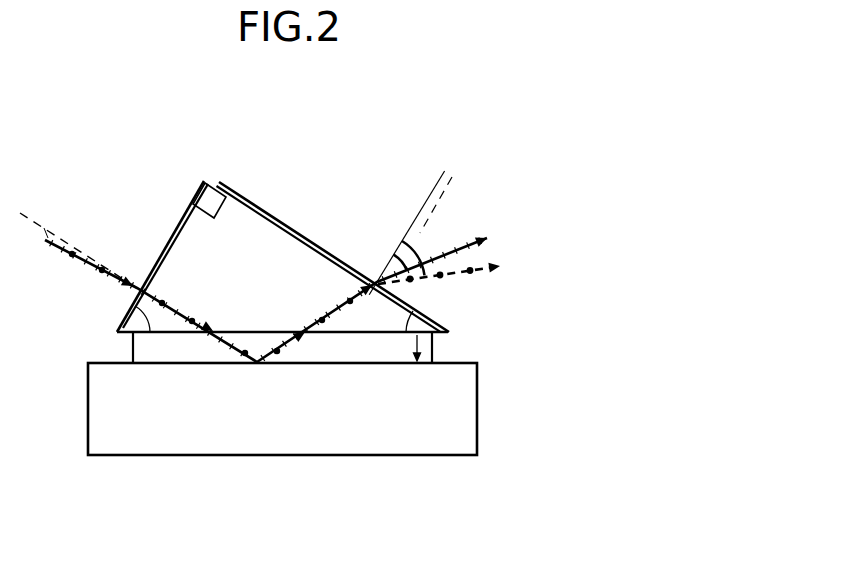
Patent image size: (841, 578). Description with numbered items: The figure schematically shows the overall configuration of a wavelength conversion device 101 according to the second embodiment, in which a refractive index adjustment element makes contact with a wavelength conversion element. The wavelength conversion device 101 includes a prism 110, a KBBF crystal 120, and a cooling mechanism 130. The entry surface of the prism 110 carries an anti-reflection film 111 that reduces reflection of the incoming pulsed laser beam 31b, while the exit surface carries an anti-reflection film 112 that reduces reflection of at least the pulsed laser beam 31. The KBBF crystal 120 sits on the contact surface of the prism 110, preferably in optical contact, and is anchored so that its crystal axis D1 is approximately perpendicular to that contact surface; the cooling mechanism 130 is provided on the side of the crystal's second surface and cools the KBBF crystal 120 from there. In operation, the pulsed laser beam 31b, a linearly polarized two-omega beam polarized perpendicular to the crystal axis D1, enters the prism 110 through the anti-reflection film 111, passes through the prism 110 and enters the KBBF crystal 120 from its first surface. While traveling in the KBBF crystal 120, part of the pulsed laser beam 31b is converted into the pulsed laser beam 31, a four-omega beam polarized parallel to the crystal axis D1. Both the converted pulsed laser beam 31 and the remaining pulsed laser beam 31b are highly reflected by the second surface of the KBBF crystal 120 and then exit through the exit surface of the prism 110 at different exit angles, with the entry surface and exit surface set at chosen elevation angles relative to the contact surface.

The wavelength conversion device 101 is at (328, 148).
The prism 110 is at (243, 237).
The anti-reflection film 111 is at (170, 240).
The anti-reflection film 112 is at (313, 243).
The KBBF crystal 120 is at (132, 342).
The cooling mechanism 130 is at (265, 456).
The pulsed laser beam 31 is at (468, 250).
The pulsed laser beam 31b is at (62, 257).
The crystal axis D1 is at (433, 345).